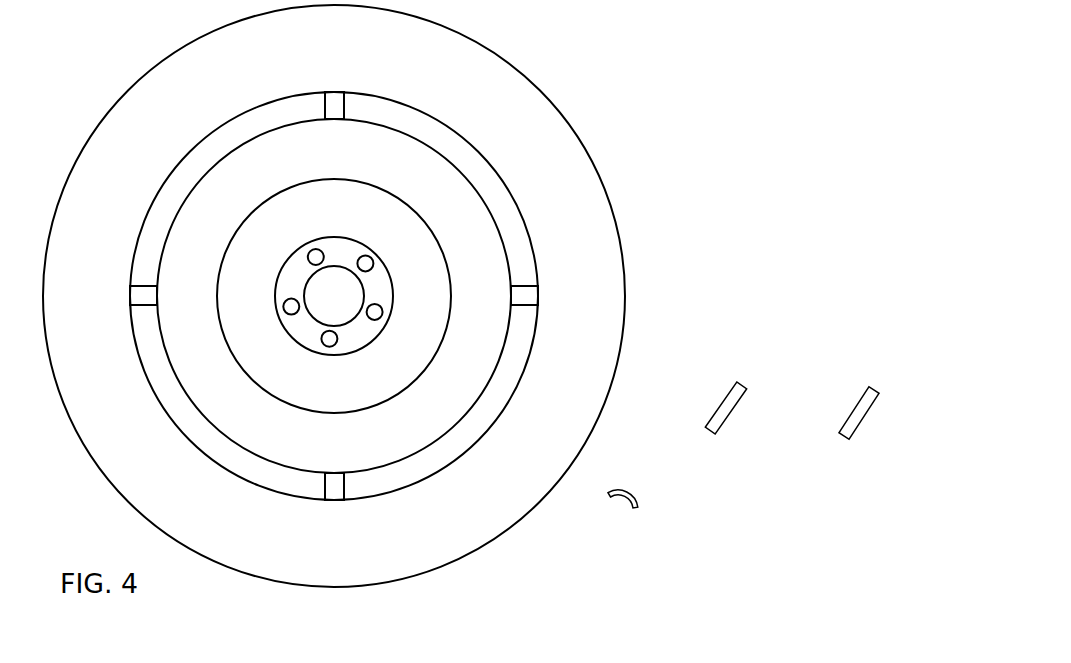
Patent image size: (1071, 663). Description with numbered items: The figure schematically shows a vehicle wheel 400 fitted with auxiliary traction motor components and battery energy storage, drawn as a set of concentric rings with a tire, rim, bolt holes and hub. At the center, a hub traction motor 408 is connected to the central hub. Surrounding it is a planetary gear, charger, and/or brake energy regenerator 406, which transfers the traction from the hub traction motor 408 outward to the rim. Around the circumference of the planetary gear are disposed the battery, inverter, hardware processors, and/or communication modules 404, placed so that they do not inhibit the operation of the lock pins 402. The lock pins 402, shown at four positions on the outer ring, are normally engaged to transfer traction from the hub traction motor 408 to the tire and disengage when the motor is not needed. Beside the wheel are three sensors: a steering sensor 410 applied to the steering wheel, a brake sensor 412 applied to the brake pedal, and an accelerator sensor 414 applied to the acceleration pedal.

The vehicle wheel 400 is at (118, 68).
The lock pins 402 is at (340, 100).
The battery, inverter, hardware processors, and/or communication modules 404 is at (493, 196).
The planetary gear, charger, and/or brake energy regenerator 406 is at (472, 258).
The hub traction motor 408 is at (412, 318).
The steering sensor 410 is at (622, 510).
The brake sensor 412 is at (726, 442).
The accelerator sensor 414 is at (845, 452).